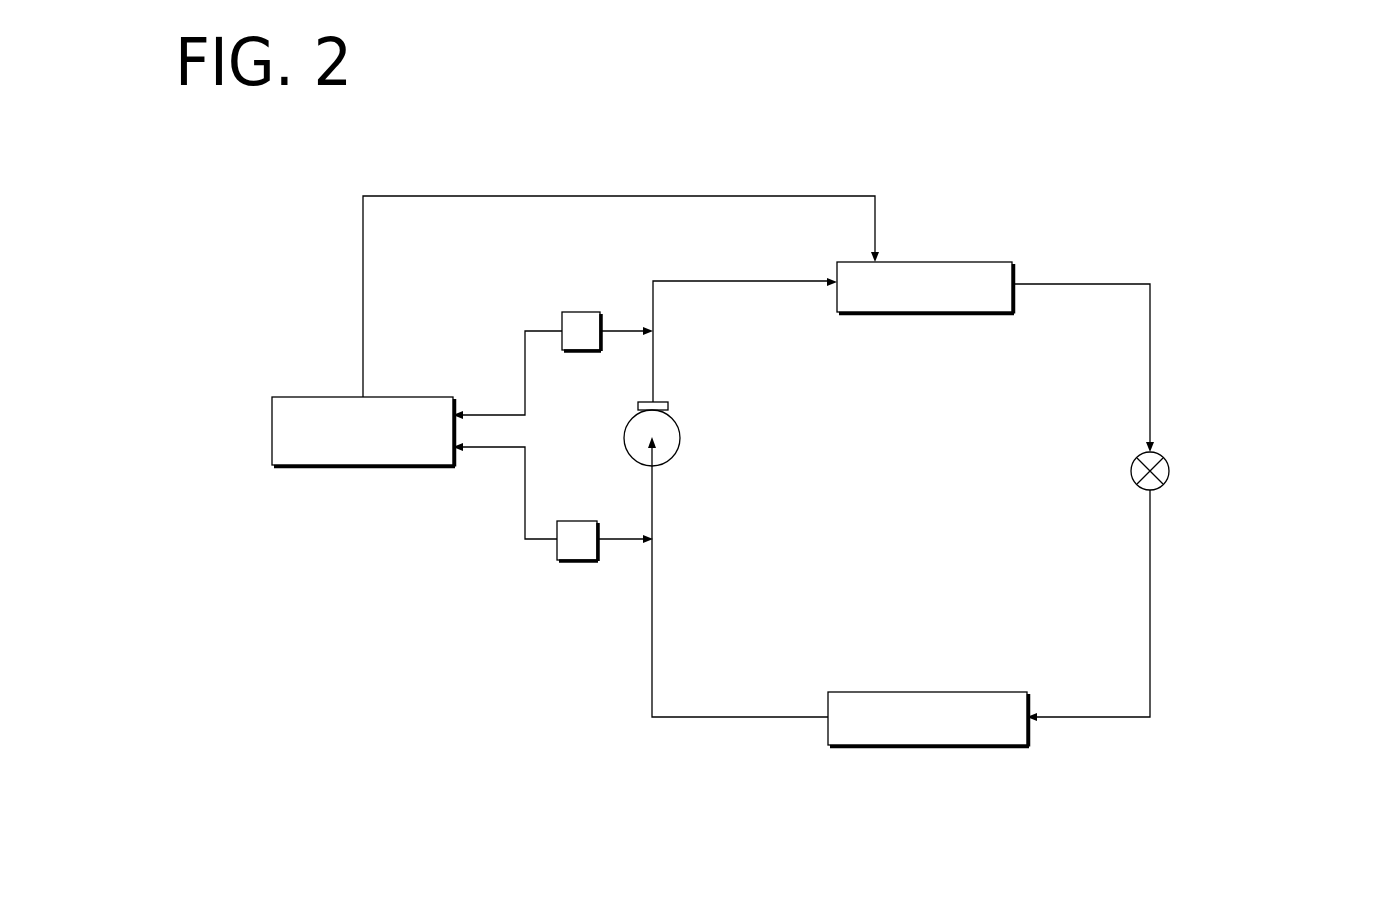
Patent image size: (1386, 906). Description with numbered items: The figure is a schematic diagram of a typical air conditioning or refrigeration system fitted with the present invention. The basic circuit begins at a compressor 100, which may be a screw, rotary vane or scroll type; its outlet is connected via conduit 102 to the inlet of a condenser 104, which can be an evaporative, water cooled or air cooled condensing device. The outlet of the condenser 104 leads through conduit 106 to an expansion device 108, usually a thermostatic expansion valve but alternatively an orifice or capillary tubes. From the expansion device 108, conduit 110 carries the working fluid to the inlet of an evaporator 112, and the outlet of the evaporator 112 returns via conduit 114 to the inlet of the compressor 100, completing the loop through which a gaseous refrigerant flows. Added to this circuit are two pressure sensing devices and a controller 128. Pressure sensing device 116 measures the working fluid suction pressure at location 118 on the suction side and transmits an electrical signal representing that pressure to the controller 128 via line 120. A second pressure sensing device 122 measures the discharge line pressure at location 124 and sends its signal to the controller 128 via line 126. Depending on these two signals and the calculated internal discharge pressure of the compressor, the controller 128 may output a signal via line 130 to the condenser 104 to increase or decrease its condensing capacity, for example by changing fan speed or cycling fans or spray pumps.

The compressor 100 is at (680, 442).
The conduit 102 is at (737, 280).
The condenser 104 is at (953, 262).
The conduit 106 is at (1153, 363).
The expansion device 108 is at (1166, 461).
The conduit 110 is at (1150, 602).
The evaporator 112 is at (998, 747).
The conduit 114 is at (713, 717).
The pressure sensing device 116 is at (563, 560).
The location 118 is at (652, 540).
The line 120 is at (525, 497).
The pressure sensing device 122 is at (572, 312).
The location 124 is at (655, 332).
The line 126 is at (525, 360).
The controller 128 is at (327, 363).
The line 130 is at (683, 198).